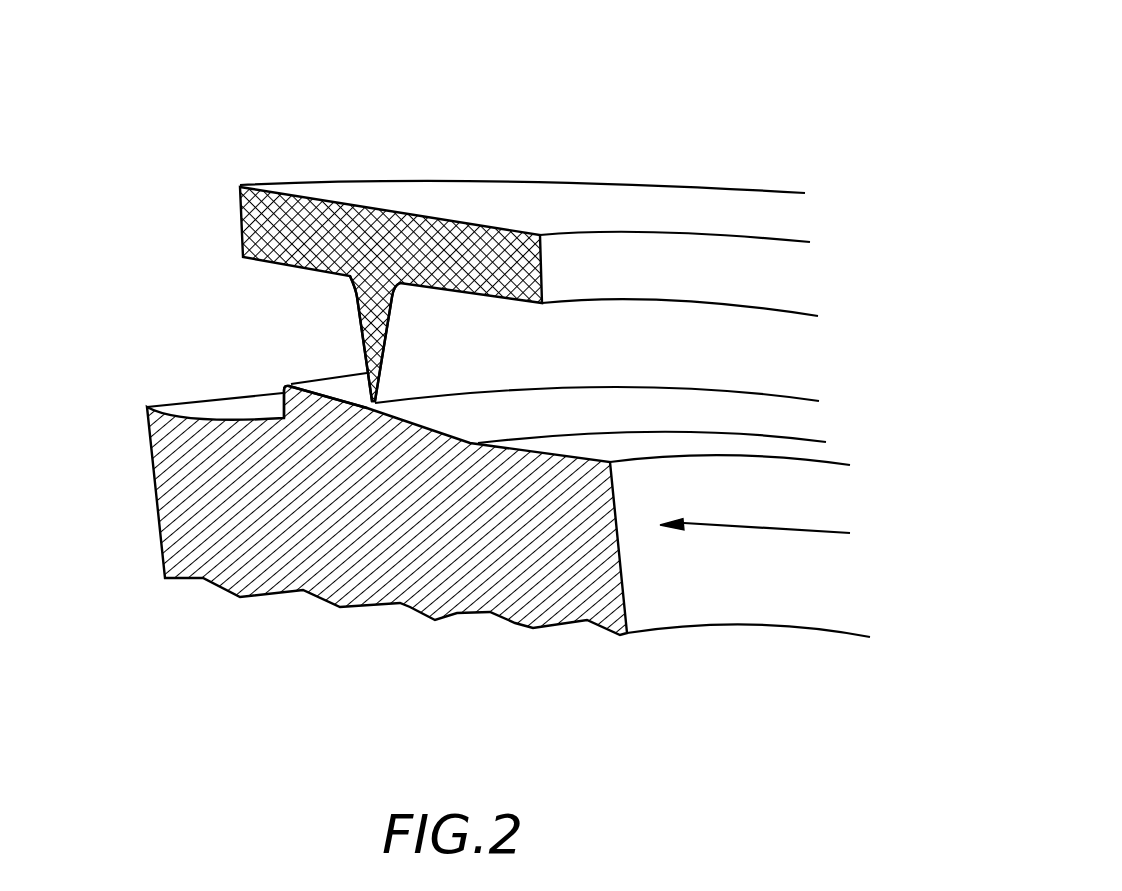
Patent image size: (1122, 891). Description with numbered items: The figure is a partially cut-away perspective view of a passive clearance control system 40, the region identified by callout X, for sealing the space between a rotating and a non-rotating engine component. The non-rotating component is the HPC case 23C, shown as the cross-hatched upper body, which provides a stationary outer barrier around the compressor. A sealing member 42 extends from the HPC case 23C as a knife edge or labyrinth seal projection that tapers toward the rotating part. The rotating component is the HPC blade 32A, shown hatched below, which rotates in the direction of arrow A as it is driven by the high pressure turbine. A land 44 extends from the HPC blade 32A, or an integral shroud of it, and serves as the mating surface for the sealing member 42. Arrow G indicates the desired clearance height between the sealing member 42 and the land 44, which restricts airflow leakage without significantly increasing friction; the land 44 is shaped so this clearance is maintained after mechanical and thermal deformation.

The HPC case 23C is at (453, 198).
The passive clearance control system 40 is at (185, 303).
The sealing member 42 is at (352, 329).
The land 44 is at (327, 390).
The arrow indicating clearance height G is at (343, 405).
The callout X is at (753, 137).
The arrow indicating rotation A is at (783, 522).
The HPC blade 32A is at (535, 570).